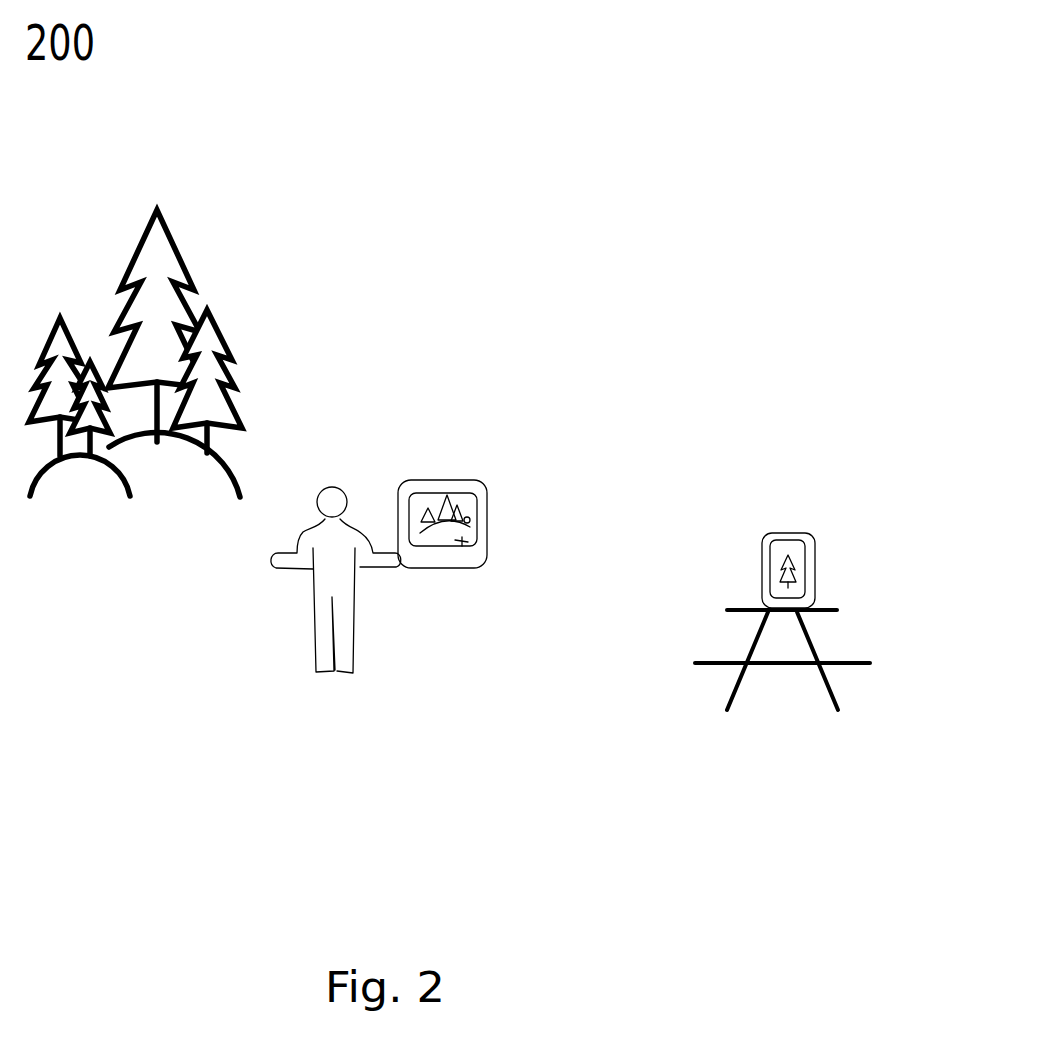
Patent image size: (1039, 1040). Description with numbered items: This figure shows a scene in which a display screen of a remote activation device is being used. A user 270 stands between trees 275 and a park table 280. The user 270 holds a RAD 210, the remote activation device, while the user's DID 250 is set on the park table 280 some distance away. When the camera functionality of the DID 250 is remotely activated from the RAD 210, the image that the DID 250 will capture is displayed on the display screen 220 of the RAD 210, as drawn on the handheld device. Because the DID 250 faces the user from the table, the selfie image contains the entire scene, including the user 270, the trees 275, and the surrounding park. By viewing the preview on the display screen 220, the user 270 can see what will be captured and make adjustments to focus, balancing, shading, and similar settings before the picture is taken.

The trees 275 is at (199, 272).
The user 270 is at (333, 480).
The RAD 210 is at (490, 525).
The display screen 220 is at (432, 549).
The DID 250 is at (795, 530).
The park table 280 is at (839, 651).